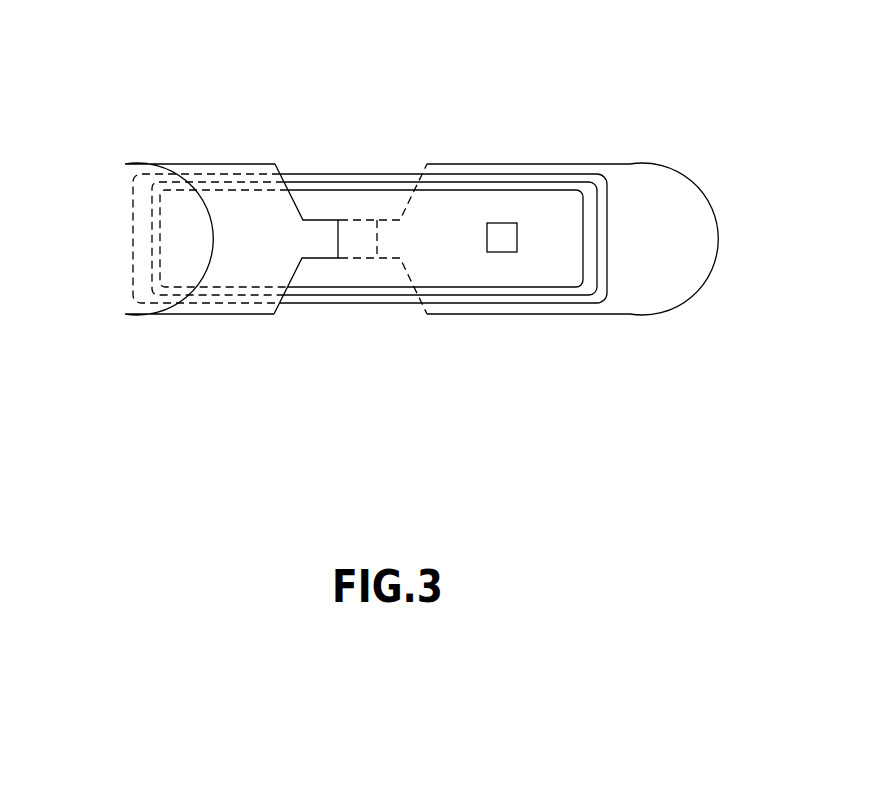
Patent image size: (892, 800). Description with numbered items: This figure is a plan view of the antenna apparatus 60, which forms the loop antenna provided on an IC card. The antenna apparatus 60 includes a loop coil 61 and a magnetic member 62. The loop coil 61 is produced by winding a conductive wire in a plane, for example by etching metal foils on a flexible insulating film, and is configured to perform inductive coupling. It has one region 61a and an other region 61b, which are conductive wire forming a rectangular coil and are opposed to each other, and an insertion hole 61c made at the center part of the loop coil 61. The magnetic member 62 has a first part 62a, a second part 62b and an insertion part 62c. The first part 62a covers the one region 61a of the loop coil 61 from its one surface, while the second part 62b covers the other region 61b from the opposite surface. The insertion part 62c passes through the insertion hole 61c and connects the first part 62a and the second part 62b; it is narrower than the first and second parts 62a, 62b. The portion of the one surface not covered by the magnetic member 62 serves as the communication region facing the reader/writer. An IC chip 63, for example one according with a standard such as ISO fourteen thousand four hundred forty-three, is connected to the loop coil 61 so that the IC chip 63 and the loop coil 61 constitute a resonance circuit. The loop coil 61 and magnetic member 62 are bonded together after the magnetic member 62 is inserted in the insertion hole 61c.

The antenna apparatus 60 is at (463, 83).
The loop coil 61 is at (360, 177).
The one region of the loop coil 61a is at (163, 222).
The other region of the loop coil 61b is at (581, 216).
The insertion hole 61c is at (362, 247).
The magnetic member 62 is at (280, 267).
The first part 62a is at (102, 280).
The second part 62b is at (663, 252).
The insertion part 62c is at (320, 245).
The IC chip 63 is at (502, 252).